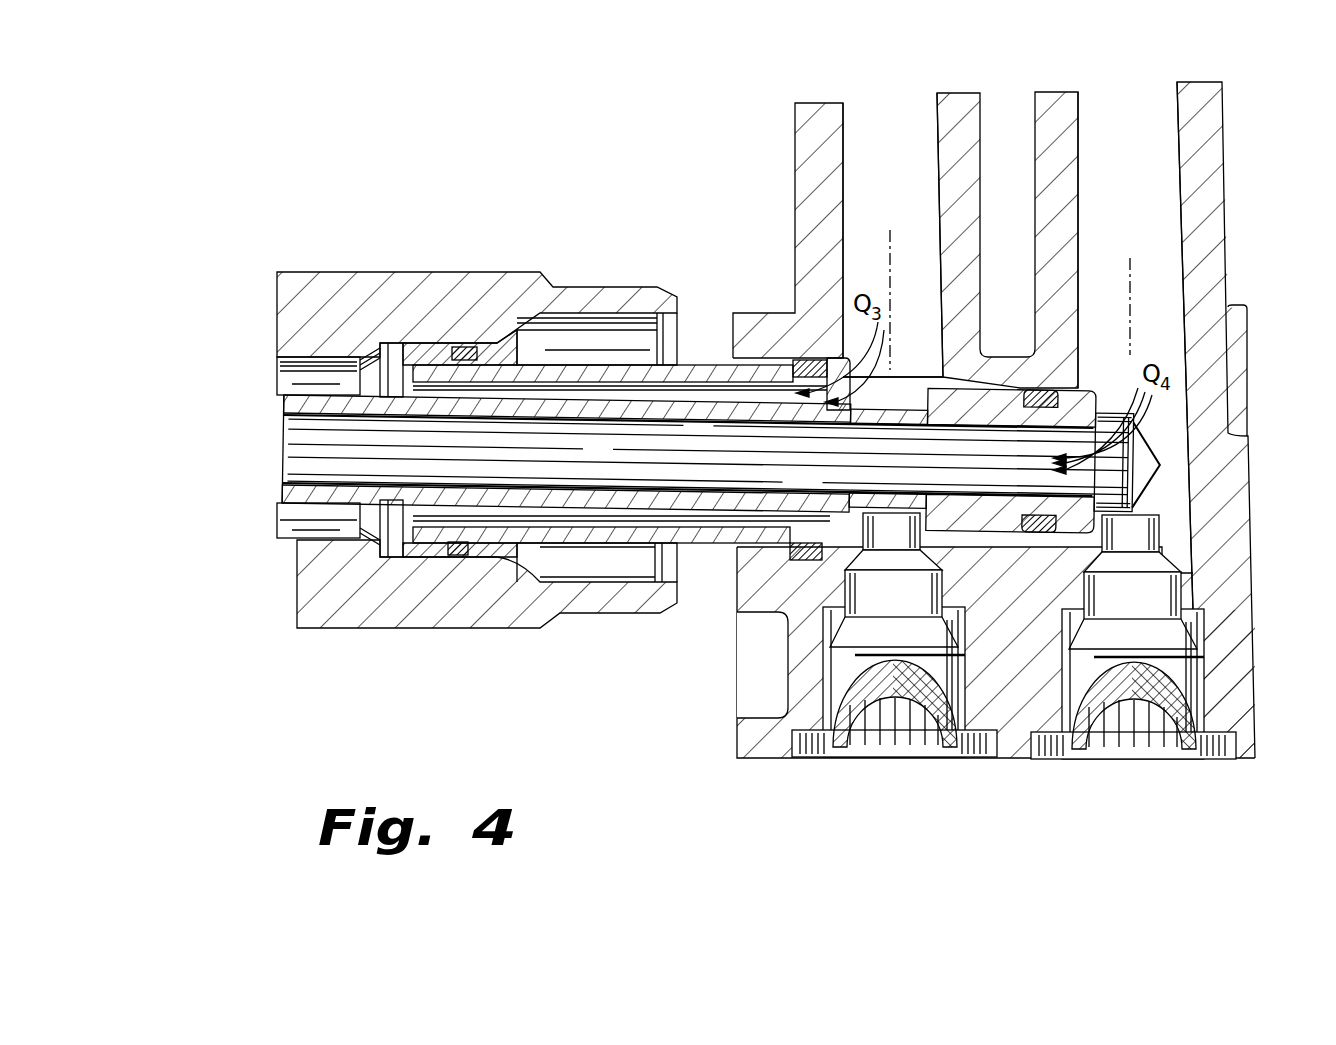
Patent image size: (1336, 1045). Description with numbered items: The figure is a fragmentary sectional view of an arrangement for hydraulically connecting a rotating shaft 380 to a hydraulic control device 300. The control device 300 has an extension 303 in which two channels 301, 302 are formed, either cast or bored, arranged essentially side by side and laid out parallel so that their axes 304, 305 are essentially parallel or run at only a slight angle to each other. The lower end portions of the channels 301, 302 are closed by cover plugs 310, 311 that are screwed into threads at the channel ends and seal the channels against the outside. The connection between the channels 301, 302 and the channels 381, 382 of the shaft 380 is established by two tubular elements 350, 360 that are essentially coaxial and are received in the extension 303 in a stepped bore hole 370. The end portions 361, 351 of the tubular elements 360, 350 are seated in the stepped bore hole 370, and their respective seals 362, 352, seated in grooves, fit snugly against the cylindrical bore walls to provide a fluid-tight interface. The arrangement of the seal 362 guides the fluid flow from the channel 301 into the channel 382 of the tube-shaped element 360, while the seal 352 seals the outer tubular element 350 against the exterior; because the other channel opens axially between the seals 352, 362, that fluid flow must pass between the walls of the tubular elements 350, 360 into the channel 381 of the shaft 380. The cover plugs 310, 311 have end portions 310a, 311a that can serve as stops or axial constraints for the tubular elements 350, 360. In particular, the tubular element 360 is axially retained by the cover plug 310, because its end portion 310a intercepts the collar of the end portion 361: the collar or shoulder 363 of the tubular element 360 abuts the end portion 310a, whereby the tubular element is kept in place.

The hydraulic control device 300 is at (1018, 398).
The channel 301 is at (1105, 112).
The channel 302 is at (897, 115).
The extension 303 is at (1225, 490).
The axis of channel 304 is at (1132, 302).
The axis of channel 305 is at (880, 268).
The cover plug 310 is at (836, 655).
The end portion of cover plug 310a is at (887, 530).
The cover plug 311 is at (1173, 655).
The end portion of cover plug 311a is at (1147, 534).
The tubular element 350 is at (598, 355).
The end portion of tubular element 351 is at (775, 547).
The seal 352 is at (800, 360).
The tubular element 360 is at (686, 420).
The end portion of tubular element 361 is at (1085, 410).
The seal 362 is at (1035, 390).
The collar or shoulder 363 is at (935, 505).
The stepped bore hole 370 is at (778, 570).
The rotating shaft 380 is at (368, 256).
The channel of shaft 381 is at (287, 378).
The channel of shaft 382 is at (300, 432).